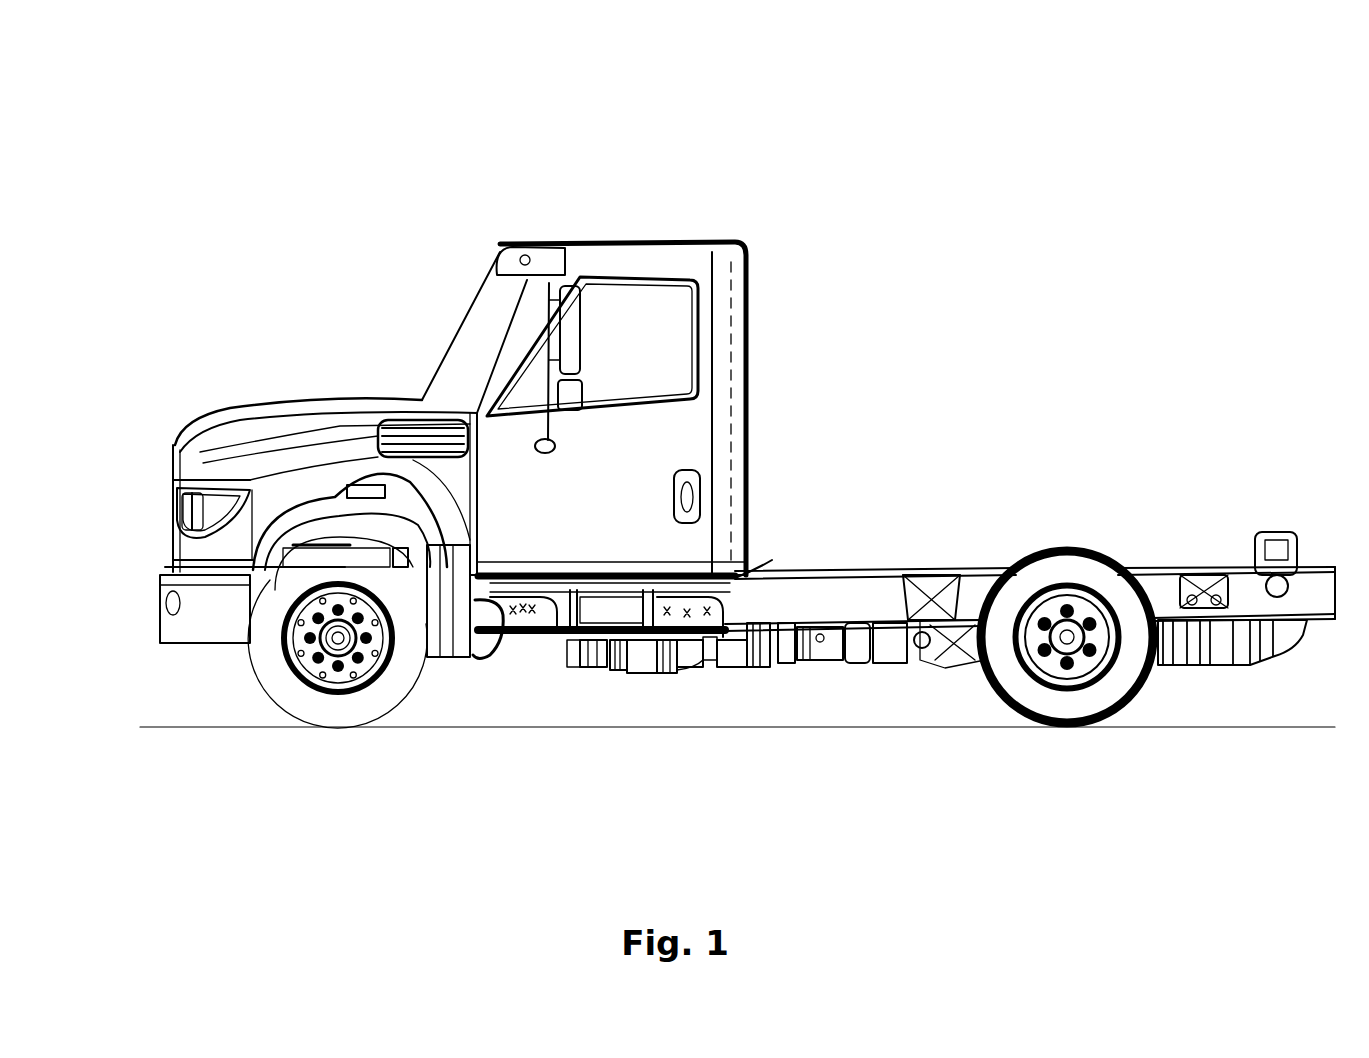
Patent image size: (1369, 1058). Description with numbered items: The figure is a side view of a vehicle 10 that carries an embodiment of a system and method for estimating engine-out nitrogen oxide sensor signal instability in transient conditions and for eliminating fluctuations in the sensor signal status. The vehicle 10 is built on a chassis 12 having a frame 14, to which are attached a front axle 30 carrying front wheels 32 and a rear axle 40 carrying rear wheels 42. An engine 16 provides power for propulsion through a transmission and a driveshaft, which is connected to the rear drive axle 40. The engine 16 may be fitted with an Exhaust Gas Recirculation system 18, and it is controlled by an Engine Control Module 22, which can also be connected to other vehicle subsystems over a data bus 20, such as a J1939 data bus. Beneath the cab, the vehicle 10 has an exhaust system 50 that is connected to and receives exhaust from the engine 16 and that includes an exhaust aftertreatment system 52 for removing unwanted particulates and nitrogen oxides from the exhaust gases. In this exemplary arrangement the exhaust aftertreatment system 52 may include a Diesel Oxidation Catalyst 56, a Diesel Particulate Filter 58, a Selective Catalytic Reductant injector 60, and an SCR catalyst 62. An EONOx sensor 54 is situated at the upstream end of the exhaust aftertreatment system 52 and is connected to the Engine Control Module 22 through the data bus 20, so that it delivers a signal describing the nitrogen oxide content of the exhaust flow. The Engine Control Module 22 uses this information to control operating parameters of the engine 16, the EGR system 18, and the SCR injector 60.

The vehicle 10 is at (747, 220).
The chassis 12 is at (1189, 565).
The frame 14 is at (1313, 565).
The engine 16 is at (332, 537).
The Exhaust Gas Recirculation (EGR) system 18 is at (405, 562).
The data bus 20 is at (722, 601).
The Engine Control Module (ECM) 22 is at (374, 482).
The front axle 30 is at (303, 680).
The front wheels 32 is at (330, 690).
The rear axle 40 is at (1047, 677).
The rear wheels 42 is at (1092, 680).
The exhaust system 50 is at (513, 662).
The exhaust aftertreatment system 52 is at (678, 682).
The EONOx sensor 54 is at (545, 648).
The Diesel Oxidation Catalyst (DOC) 56 is at (588, 665).
The Diesel Particulate Filter (DPF) 58 is at (643, 673).
The Selective Catalytic Reductant (SCR) injector 60 is at (708, 653).
The SCR catalyst 62 is at (763, 667).